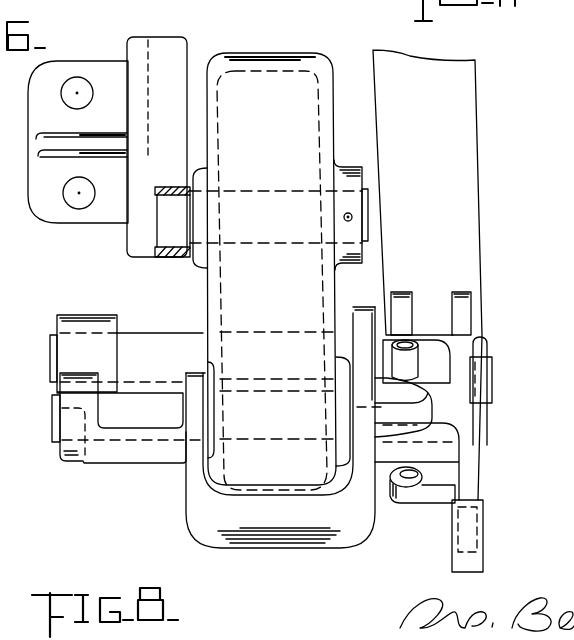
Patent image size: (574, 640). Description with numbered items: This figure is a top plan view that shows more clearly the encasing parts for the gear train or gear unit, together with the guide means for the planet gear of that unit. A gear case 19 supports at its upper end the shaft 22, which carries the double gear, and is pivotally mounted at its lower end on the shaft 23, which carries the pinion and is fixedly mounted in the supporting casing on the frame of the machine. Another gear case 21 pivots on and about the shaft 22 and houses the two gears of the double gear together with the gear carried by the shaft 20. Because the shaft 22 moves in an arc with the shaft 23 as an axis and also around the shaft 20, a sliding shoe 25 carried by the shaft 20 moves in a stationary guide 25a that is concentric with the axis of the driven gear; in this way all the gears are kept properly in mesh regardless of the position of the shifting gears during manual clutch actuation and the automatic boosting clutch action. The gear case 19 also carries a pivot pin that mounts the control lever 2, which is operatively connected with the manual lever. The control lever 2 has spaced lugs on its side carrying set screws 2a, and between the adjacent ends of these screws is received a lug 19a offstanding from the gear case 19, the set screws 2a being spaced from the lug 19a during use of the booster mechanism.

The control lever 2 is at (462, 458).
The set screws 2a is at (434, 330).
The gear case 19 is at (352, 533).
The lug 19a is at (413, 393).
The shaft 20 is at (368, 208).
The gear case 21 is at (287, 80).
The shaft 22 is at (55, 358).
The shaft 23 is at (310, 408).
The sliding shoe 25 is at (173, 258).
The stationary guide 25a is at (172, 60).